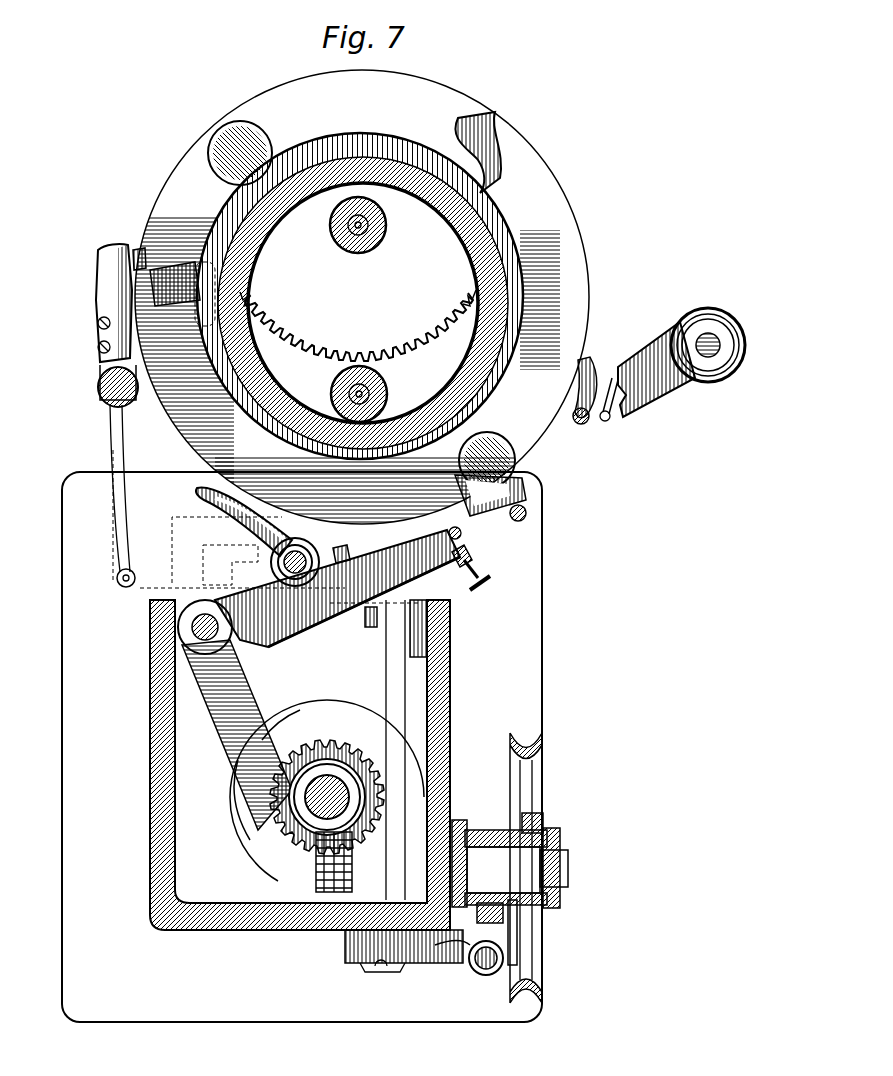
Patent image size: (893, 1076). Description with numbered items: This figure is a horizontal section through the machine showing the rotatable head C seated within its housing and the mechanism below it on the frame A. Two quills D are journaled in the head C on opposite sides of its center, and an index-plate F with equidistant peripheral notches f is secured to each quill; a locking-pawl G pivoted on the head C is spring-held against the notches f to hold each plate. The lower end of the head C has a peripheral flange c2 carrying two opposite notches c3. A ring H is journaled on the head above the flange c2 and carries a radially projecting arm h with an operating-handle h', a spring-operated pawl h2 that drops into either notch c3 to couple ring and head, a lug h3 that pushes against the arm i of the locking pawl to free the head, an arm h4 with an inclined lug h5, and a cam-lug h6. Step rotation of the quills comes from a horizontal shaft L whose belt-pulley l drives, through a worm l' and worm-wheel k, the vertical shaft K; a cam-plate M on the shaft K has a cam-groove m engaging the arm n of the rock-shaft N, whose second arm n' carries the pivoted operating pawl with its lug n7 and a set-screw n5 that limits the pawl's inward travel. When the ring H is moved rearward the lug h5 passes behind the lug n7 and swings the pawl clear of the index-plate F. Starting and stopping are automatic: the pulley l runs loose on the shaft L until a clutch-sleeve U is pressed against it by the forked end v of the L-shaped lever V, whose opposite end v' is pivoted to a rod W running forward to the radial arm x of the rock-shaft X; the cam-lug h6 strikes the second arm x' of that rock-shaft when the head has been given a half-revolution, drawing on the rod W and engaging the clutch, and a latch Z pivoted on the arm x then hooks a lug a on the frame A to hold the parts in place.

The frame A is at (313, 747).
The peripheral flange c2 is at (361, 300).
The ring H is at (525, 218).
The index-plate F is at (363, 303).
The head C is at (450, 228).
The peripheral notches f is at (430, 336).
The quills D is at (330, 230).
The locking-pawl G is at (222, 138).
The cam-lug h6 is at (478, 118).
The horizontally-journaled shaft L is at (100, 292).
The arm of pawl I i is at (98, 320).
The peripheral notches c3 is at (582, 362).
The lug h3 is at (185, 270).
The spring-operated pawl h2 is at (612, 375).
The radially-projecting arm h is at (656, 379).
The operating-handle h' is at (708, 354).
The arm h4 is at (528, 492).
The lug n7 is at (528, 515).
The lug h5 is at (466, 540).
The set-screw n5 is at (475, 575).
The second arm of rock-shaft X x' is at (244, 522).
The radial arm x is at (346, 553).
The rock-shaft X is at (280, 578).
The lug a is at (280, 586).
The second arm of rock-shaft N n' is at (337, 588).
The bar or latch Z is at (370, 628).
The rod W is at (395, 672).
The rock-shaft N is at (205, 642).
The arm of rock-shaft N n is at (237, 735).
The worm-wheel k is at (262, 824).
The cam-plate M is at (318, 720).
The cam-groove m is at (300, 722).
The shaft K is at (340, 740).
The worm l' is at (312, 862).
The belt-pulley l is at (517, 868).
The sleeve (clutch-sleeve) U is at (545, 818).
The forked end of lever V v is at (535, 932).
The opposite end of lever V v' is at (404, 963).
The L-shaped lever V is at (474, 968).